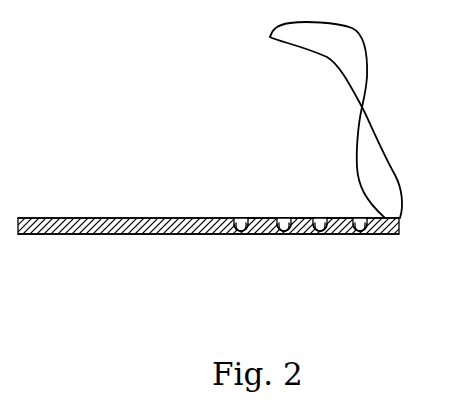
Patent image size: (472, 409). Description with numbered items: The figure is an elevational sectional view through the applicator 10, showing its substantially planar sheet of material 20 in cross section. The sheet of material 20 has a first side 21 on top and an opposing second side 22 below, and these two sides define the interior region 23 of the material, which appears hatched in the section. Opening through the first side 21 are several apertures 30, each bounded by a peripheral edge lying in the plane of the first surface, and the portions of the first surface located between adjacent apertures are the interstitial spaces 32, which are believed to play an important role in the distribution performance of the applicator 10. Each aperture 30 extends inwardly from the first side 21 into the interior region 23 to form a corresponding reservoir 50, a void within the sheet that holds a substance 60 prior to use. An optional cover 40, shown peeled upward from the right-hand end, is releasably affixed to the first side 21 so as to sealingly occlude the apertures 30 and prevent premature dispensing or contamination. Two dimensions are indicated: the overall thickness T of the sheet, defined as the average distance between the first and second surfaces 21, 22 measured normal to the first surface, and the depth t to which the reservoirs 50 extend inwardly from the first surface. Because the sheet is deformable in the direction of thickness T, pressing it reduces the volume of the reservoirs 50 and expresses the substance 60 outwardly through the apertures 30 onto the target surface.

The applicator 10 is at (214, 185).
The sheet of material 20 is at (206, 214).
The first side 21 is at (110, 217).
The second side 22 is at (122, 235).
The interior region 23 is at (77, 226).
The apertures 30 is at (300, 235).
The interstitial spaces 32 is at (340, 217).
The cover 40 is at (375, 135).
The reservoirs 50 is at (243, 231).
The substance 60 is at (360, 231).
The depth t is at (220, 263).
The overall thickness T is at (425, 182).